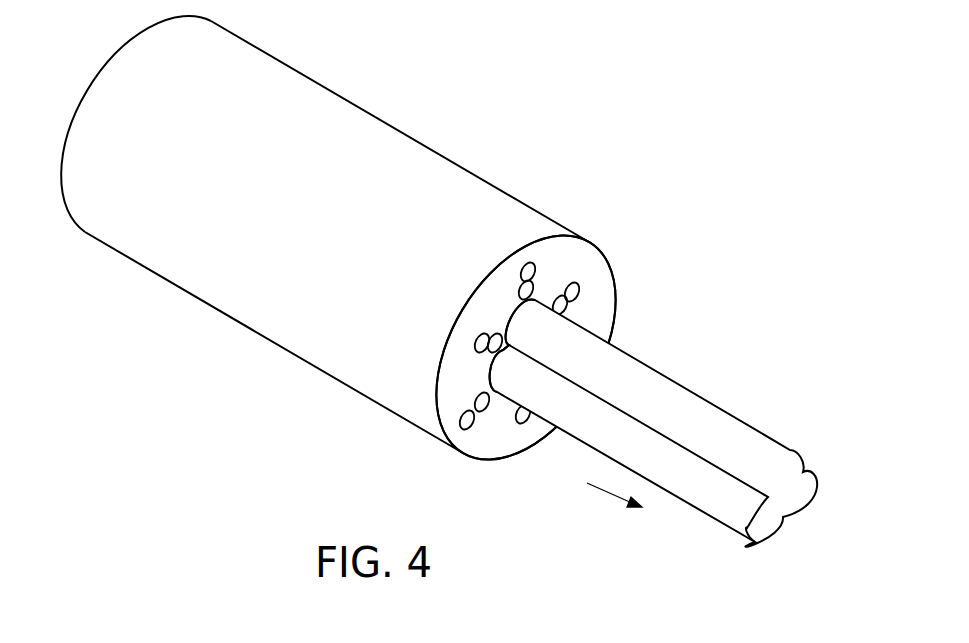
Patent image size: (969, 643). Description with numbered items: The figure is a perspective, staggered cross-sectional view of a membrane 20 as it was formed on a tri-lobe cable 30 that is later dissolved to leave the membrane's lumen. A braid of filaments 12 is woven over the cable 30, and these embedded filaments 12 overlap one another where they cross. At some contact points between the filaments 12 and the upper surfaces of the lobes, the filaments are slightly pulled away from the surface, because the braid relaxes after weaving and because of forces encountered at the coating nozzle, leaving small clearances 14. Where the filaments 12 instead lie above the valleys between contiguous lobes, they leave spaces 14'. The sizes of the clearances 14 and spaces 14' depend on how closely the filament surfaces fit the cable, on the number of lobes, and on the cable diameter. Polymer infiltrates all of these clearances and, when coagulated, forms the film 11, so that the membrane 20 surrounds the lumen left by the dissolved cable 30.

The membrane 20 is at (427, 125).
The film 11 is at (614, 298).
The filaments 12 is at (578, 287).
The clearances 14 is at (536, 329).
The spaces 14' is at (518, 374).
The tri-lobe cable 30 is at (740, 420).